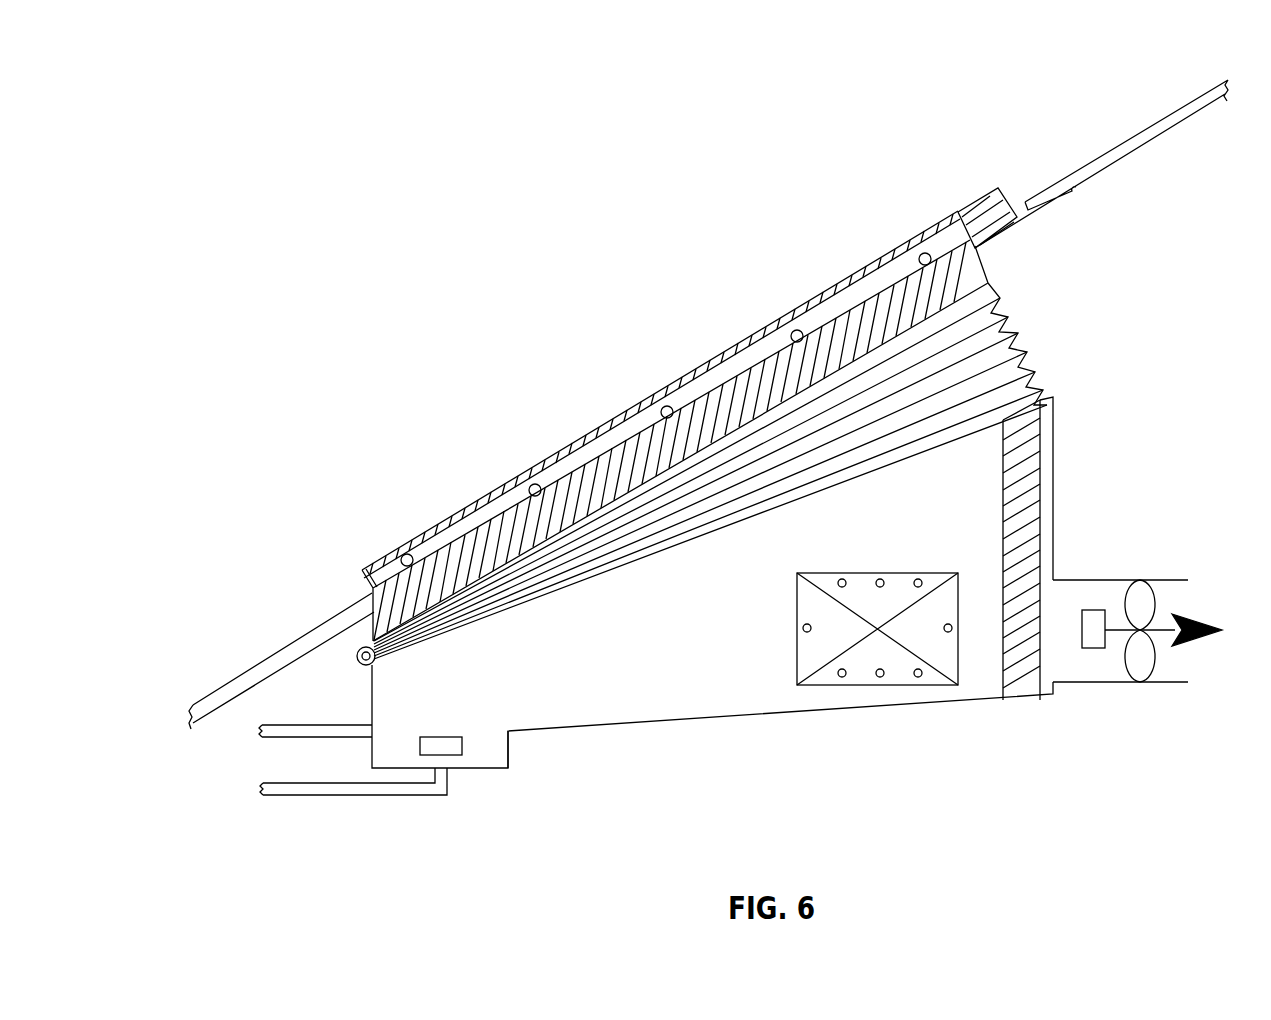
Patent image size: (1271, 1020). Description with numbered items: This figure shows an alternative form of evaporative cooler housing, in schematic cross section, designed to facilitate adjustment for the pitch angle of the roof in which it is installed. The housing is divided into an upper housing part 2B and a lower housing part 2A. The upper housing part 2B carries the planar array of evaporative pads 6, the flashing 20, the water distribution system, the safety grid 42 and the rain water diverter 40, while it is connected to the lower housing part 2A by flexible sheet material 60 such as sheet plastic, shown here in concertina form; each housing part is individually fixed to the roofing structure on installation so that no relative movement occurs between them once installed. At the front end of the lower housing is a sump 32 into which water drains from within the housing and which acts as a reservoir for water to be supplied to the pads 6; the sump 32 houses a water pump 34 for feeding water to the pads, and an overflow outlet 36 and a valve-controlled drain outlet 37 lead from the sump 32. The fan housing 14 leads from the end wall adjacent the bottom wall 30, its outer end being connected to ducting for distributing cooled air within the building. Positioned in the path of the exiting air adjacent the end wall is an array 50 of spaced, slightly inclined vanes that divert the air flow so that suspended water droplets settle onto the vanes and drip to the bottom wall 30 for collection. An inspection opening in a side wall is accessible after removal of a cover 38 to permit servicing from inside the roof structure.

The evaporative pads 6 is at (688, 433).
The fan housing 14 is at (1170, 580).
The flashing 20 is at (1125, 237).
The bottom wall 30 is at (745, 718).
The sump 32 is at (513, 758).
The water pump 34 is at (450, 748).
The overflow outlet 36 is at (323, 730).
The drain outlet 37 is at (328, 790).
The cover 38 is at (933, 653).
The rain water diverter 40 is at (977, 213).
The safety grid 42 is at (458, 510).
The array of spaced vanes 50 is at (1018, 560).
The flexible sheet material 60 is at (1010, 316).
The lower housing part 2A is at (600, 485).
The upper housing part 2B is at (600, 665).